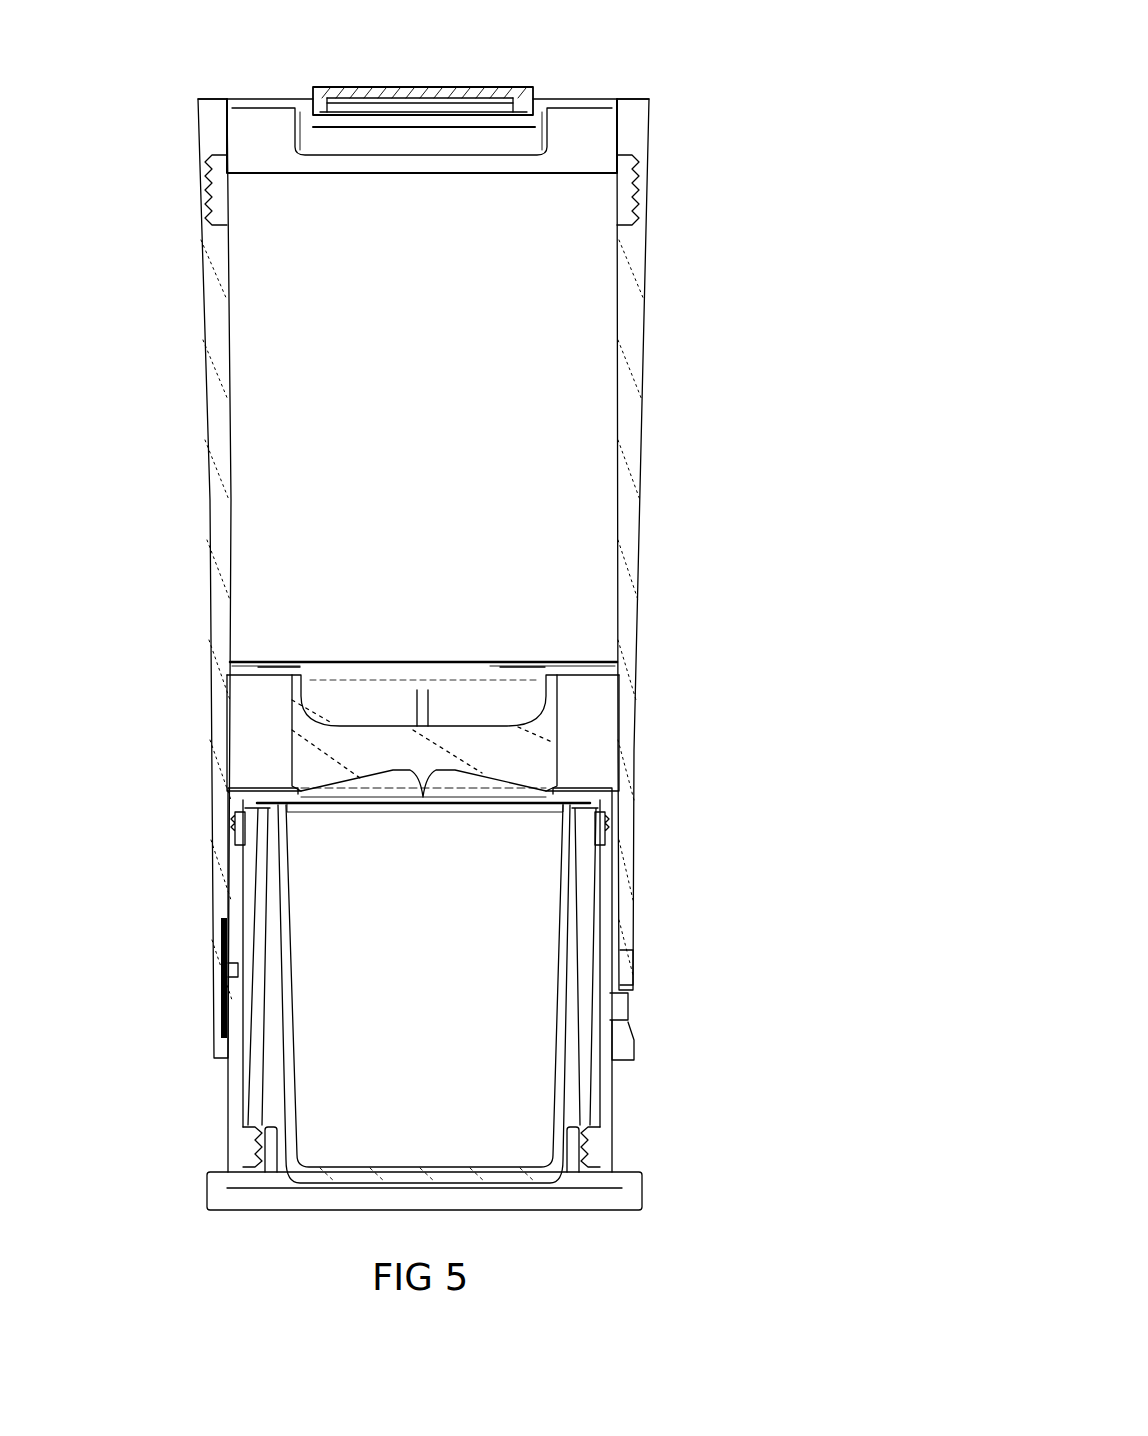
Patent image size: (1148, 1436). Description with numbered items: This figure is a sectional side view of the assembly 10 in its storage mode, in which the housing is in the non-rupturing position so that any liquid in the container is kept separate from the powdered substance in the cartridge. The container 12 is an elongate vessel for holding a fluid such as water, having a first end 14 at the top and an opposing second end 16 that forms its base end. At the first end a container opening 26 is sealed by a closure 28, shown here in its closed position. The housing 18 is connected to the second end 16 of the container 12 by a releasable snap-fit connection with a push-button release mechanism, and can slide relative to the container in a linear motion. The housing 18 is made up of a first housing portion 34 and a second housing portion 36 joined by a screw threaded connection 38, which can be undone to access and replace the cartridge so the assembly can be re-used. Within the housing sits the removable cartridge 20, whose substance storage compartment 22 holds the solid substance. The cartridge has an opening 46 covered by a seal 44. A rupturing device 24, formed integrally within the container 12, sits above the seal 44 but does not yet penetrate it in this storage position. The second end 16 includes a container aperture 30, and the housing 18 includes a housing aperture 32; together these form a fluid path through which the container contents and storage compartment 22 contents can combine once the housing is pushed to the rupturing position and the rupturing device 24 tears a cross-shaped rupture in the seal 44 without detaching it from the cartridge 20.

The assembly 10 is at (758, 158).
The container 12 is at (634, 378).
The first end 14 is at (233, 179).
The second end 16 is at (607, 650).
The housing 18 is at (228, 1105).
The cartridge 20 is at (560, 1088).
The substance storage compartment 22 is at (403, 1071).
The rupturing device 24 is at (522, 750).
The container opening 26 is at (494, 140).
The closure 28 is at (385, 87).
The container aperture 30 is at (400, 672).
The housing aperture 32 is at (357, 788).
The first housing portion 34 is at (630, 1193).
The second housing portion 36 is at (240, 1073).
The screw threaded connection 38 is at (252, 1140).
The seal 44 is at (325, 802).
The opening 46 is at (343, 810).